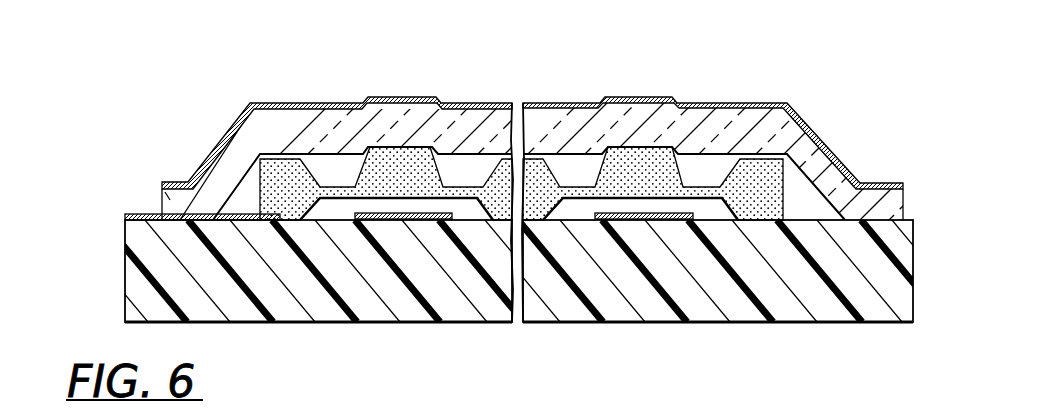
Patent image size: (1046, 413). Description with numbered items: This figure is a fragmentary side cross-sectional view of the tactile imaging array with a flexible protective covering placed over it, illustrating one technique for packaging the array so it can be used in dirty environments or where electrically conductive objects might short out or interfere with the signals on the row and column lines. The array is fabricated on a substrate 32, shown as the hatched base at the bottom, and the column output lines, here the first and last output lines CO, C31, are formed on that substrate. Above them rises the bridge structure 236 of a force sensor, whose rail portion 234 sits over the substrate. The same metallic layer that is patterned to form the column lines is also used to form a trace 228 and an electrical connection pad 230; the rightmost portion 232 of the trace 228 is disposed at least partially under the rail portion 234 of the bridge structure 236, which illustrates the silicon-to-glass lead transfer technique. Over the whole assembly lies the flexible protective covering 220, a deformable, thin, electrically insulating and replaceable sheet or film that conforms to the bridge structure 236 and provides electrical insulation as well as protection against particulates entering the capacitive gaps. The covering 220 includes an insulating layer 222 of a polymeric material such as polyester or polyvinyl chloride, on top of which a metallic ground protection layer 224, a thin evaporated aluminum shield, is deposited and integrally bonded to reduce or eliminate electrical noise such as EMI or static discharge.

The substrate 32 is at (114, 249).
The trace 228 is at (163, 230).
The electrical connection pad 230 is at (145, 218).
The rightmost portion of trace 232 is at (276, 220).
The rail portion 234 is at (278, 186).
The bridge structure 236 is at (333, 157).
The flexible protective covering 220 is at (812, 102).
The insulating layer 222 is at (807, 148).
The metallic ground protection layer 224 is at (757, 101).
The output line CO is at (412, 222).
The output line C31 is at (655, 220).